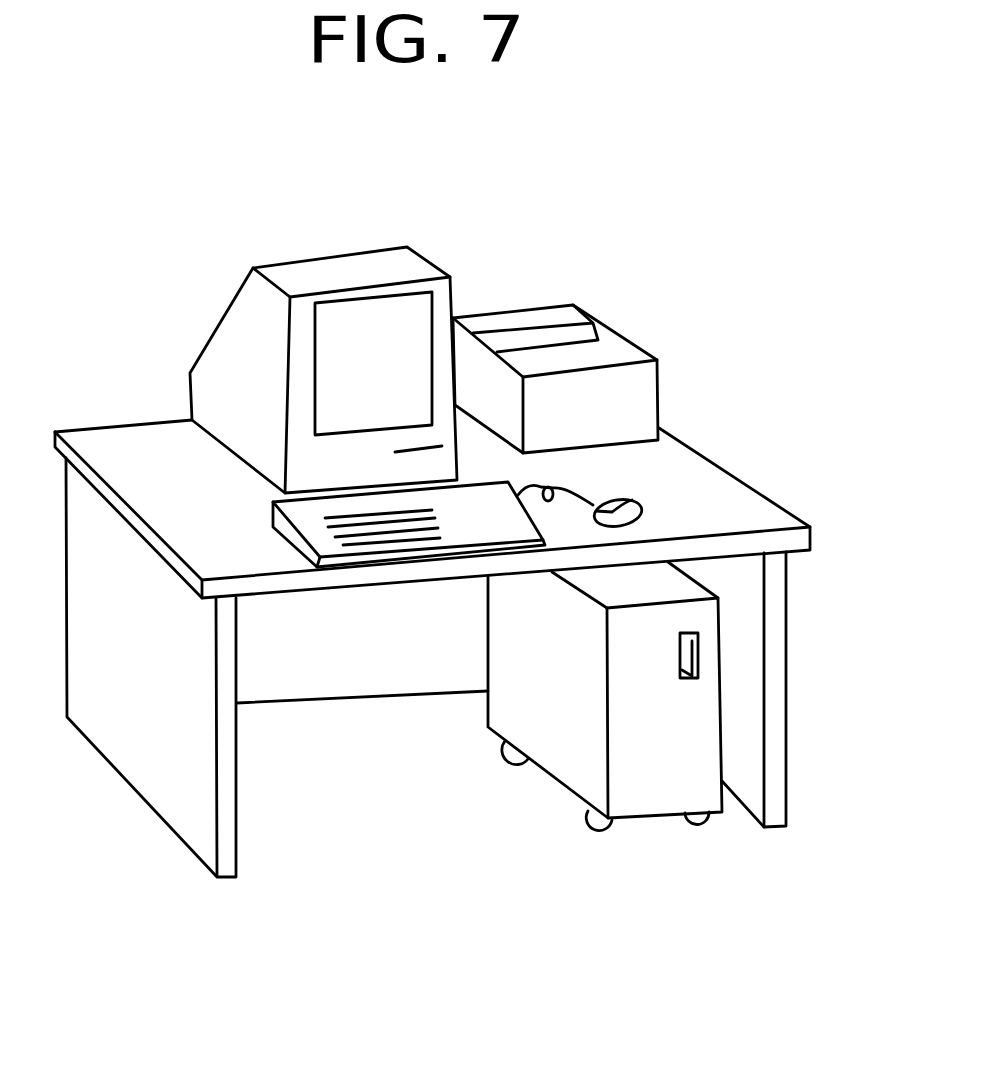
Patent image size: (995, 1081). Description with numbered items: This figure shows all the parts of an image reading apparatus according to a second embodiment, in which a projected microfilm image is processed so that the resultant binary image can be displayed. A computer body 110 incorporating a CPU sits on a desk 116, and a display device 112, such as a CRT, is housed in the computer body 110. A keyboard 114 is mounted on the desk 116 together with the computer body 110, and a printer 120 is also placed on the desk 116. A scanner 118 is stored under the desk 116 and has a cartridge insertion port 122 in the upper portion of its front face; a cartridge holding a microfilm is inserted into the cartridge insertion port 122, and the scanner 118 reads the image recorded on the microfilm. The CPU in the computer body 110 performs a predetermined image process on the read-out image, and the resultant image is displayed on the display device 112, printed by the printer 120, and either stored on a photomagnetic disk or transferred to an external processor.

The computer body 110 is at (203, 352).
The display device 112 is at (350, 320).
The keyboard 114 is at (393, 523).
The desk 116 is at (750, 487).
The scanner 118 is at (663, 818).
The printer 120 is at (625, 343).
The cartridge insertion port 122 is at (692, 657).